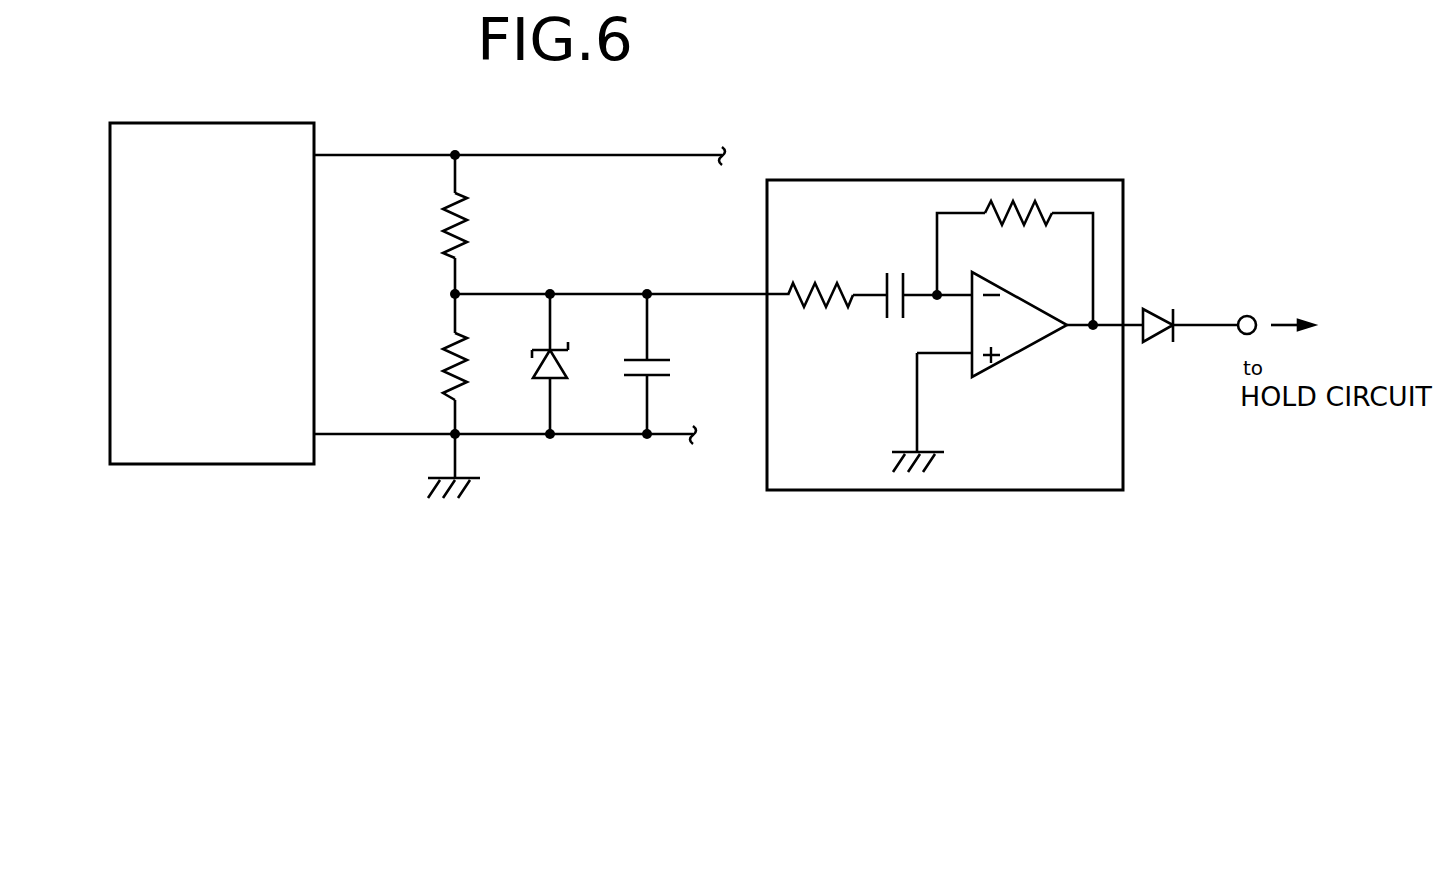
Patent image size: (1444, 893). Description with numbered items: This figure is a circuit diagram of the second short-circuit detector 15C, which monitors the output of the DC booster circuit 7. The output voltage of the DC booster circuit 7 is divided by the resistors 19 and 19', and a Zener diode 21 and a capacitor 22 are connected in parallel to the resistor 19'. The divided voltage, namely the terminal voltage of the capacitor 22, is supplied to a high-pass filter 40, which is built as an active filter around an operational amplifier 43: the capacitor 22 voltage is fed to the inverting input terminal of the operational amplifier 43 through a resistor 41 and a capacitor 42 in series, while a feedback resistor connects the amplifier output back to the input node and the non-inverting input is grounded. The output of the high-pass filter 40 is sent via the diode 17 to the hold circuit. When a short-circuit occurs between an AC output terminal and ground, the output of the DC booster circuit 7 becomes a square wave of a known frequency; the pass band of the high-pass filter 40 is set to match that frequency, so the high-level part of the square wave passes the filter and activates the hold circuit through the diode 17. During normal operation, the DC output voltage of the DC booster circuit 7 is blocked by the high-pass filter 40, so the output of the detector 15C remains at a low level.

The DC booster circuit 7 is at (206, 123).
The resistor 19 is at (416, 225).
The resistor 19' is at (411, 366).
The Zener diode 21 is at (538, 370).
The capacitor 22 is at (660, 356).
The second short-circuit detector 15C is at (874, 161).
The high-pass filter 40 is at (1003, 181).
The resistor 41 is at (807, 282).
The capacitor 42 is at (884, 312).
The operational amplifier 43 is at (1024, 351).
The diode 17 is at (1150, 310).